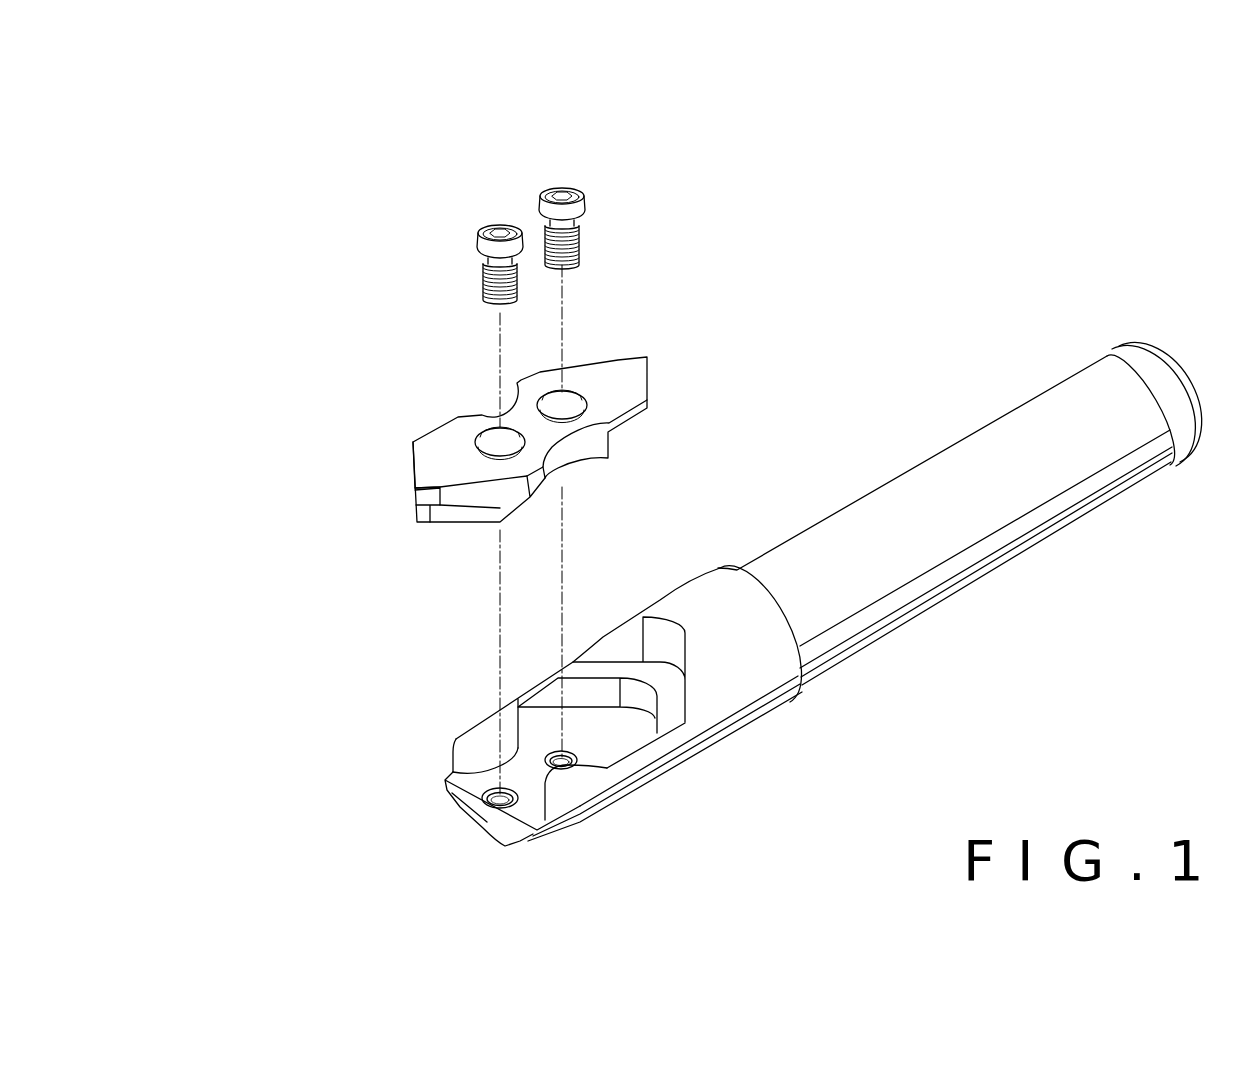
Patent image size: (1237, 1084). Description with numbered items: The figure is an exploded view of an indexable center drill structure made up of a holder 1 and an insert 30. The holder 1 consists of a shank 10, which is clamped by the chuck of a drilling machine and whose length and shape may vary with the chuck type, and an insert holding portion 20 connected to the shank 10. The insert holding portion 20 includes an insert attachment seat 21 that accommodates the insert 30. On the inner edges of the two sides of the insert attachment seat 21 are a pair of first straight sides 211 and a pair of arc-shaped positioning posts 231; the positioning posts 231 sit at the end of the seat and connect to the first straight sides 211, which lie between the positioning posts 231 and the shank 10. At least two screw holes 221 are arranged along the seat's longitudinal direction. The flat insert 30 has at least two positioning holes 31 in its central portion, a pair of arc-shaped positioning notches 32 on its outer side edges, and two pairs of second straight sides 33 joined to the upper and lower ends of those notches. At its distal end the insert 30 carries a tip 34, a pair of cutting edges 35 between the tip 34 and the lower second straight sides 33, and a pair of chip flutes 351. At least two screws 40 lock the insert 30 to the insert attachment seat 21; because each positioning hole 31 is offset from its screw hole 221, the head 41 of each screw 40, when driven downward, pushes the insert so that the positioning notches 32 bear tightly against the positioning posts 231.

The holder 1 is at (963, 421).
The shank 10 is at (1012, 543).
The insert holding portion 20 is at (633, 770).
The insert attachment seat 21 is at (627, 727).
The first straight sides 211 is at (545, 707).
The screw holes 221 is at (562, 747).
The positioning posts 231 is at (490, 723).
The insert 30 is at (647, 358).
The positioning holes 31 is at (493, 445).
The positioning notches 32 is at (497, 427).
The second straight sides 33 is at (437, 430).
The tip 34 is at (411, 498).
The cutting edges 35 is at (413, 458).
The chip flutes 351 is at (478, 502).
The screws 40 is at (488, 223).
The head 41 is at (478, 256).